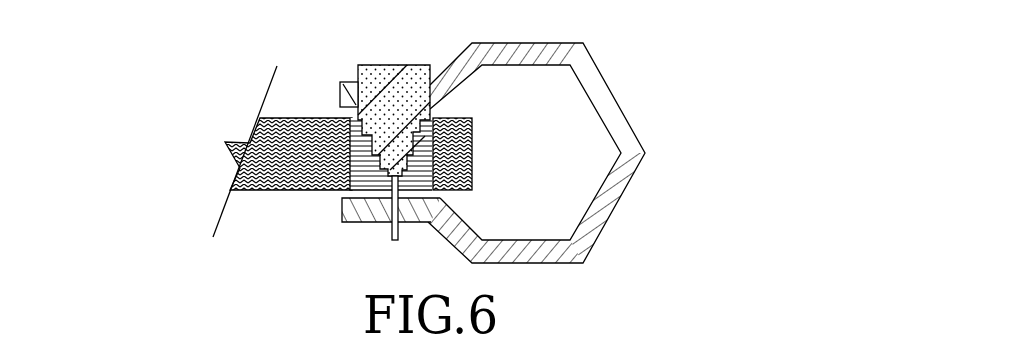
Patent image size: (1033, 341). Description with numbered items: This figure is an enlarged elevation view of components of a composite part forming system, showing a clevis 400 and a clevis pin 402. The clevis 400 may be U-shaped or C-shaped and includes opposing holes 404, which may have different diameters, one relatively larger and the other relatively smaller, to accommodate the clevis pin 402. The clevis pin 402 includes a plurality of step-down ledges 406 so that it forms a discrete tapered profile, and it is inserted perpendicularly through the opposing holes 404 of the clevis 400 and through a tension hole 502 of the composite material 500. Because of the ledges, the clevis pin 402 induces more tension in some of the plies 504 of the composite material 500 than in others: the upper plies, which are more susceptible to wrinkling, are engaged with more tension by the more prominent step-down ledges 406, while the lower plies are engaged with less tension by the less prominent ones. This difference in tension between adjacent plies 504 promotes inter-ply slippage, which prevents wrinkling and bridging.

The clevis 400 is at (600, 82).
The clevis pin 402 is at (381, 79).
The opposing holes 404 is at (350, 78).
The step-down ledges 406 is at (422, 124).
The composite material 500 is at (452, 117).
The tension hole 502 is at (453, 189).
The plies 504 is at (474, 176).